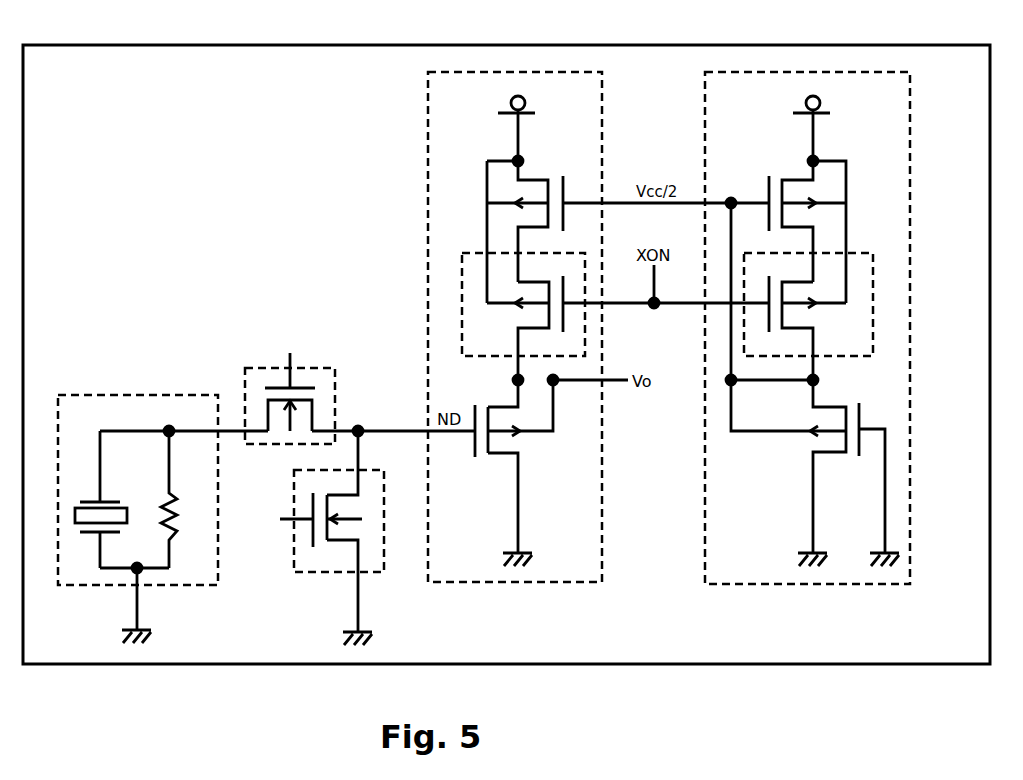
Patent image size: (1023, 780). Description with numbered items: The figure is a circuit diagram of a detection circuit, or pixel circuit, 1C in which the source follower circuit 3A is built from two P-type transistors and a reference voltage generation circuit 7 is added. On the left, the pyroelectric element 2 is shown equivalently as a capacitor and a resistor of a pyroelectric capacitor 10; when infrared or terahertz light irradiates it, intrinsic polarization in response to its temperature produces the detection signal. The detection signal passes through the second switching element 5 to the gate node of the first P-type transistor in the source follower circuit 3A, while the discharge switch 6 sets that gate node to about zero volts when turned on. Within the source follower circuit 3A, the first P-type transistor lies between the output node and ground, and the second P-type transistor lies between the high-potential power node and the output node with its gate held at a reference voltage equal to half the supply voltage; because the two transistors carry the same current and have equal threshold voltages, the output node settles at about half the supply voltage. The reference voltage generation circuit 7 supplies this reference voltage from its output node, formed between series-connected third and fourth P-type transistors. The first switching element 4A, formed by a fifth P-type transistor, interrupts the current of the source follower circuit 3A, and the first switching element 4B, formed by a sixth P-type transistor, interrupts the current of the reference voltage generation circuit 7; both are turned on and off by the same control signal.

The detection circuit (pixel circuit) 1C is at (280, 45).
The pyroelectric element 2 is at (138, 494).
The pyroelectric capacitor 10 is at (92, 540).
The second switching element 5 is at (244, 376).
The discharge switch 6 is at (328, 572).
The source follower circuit 3A is at (504, 327).
The first switching element 4A is at (462, 269).
The reference voltage generation circuit 7 is at (825, 328).
The first switching element 4B is at (862, 253).